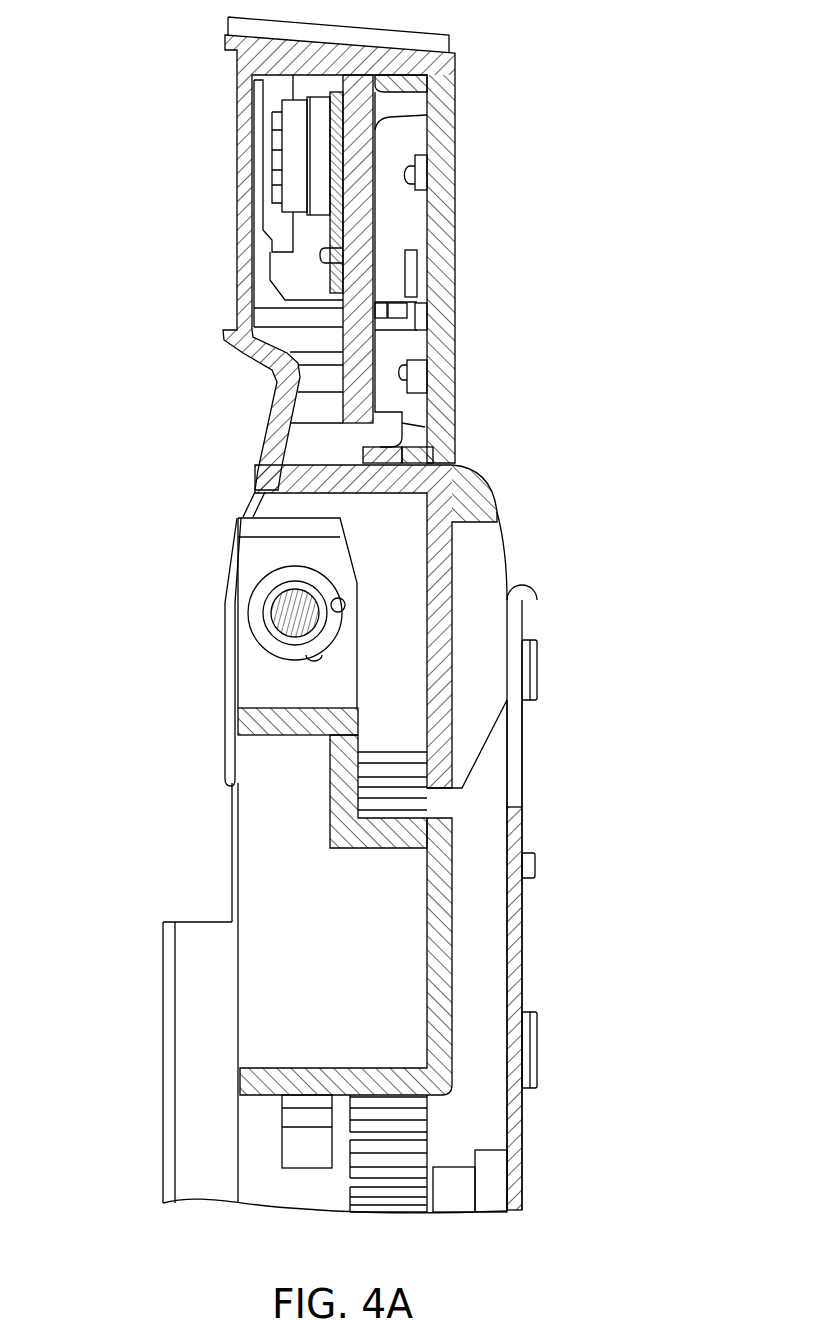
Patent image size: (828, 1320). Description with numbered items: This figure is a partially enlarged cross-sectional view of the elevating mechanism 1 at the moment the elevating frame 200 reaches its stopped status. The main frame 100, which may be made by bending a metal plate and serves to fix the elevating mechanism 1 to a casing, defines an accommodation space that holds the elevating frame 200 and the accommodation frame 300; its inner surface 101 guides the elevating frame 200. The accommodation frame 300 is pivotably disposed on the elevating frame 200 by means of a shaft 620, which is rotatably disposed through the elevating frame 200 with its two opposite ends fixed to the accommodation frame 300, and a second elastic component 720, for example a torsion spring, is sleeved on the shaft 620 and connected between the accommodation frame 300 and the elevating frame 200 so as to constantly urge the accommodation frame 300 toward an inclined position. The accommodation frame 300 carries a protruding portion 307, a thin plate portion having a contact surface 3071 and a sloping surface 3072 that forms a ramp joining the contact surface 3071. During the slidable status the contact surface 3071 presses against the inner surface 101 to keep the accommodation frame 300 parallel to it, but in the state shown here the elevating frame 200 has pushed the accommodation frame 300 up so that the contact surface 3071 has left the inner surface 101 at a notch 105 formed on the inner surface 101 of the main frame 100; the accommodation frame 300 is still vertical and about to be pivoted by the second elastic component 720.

The elevating mechanism 1 is at (167, 422).
The accommodation frame 300 is at (453, 234).
The protruding portion 307 is at (473, 622).
The contact surface 3071 is at (510, 662).
The notch 105 is at (513, 733).
The sloping surface 3072 is at (480, 755).
The second elastic component 720 is at (272, 577).
The shaft 620 is at (268, 614).
The elevating frame 200 is at (250, 723).
The inner surface 101 is at (505, 959).
The main frame 100 is at (518, 1115).